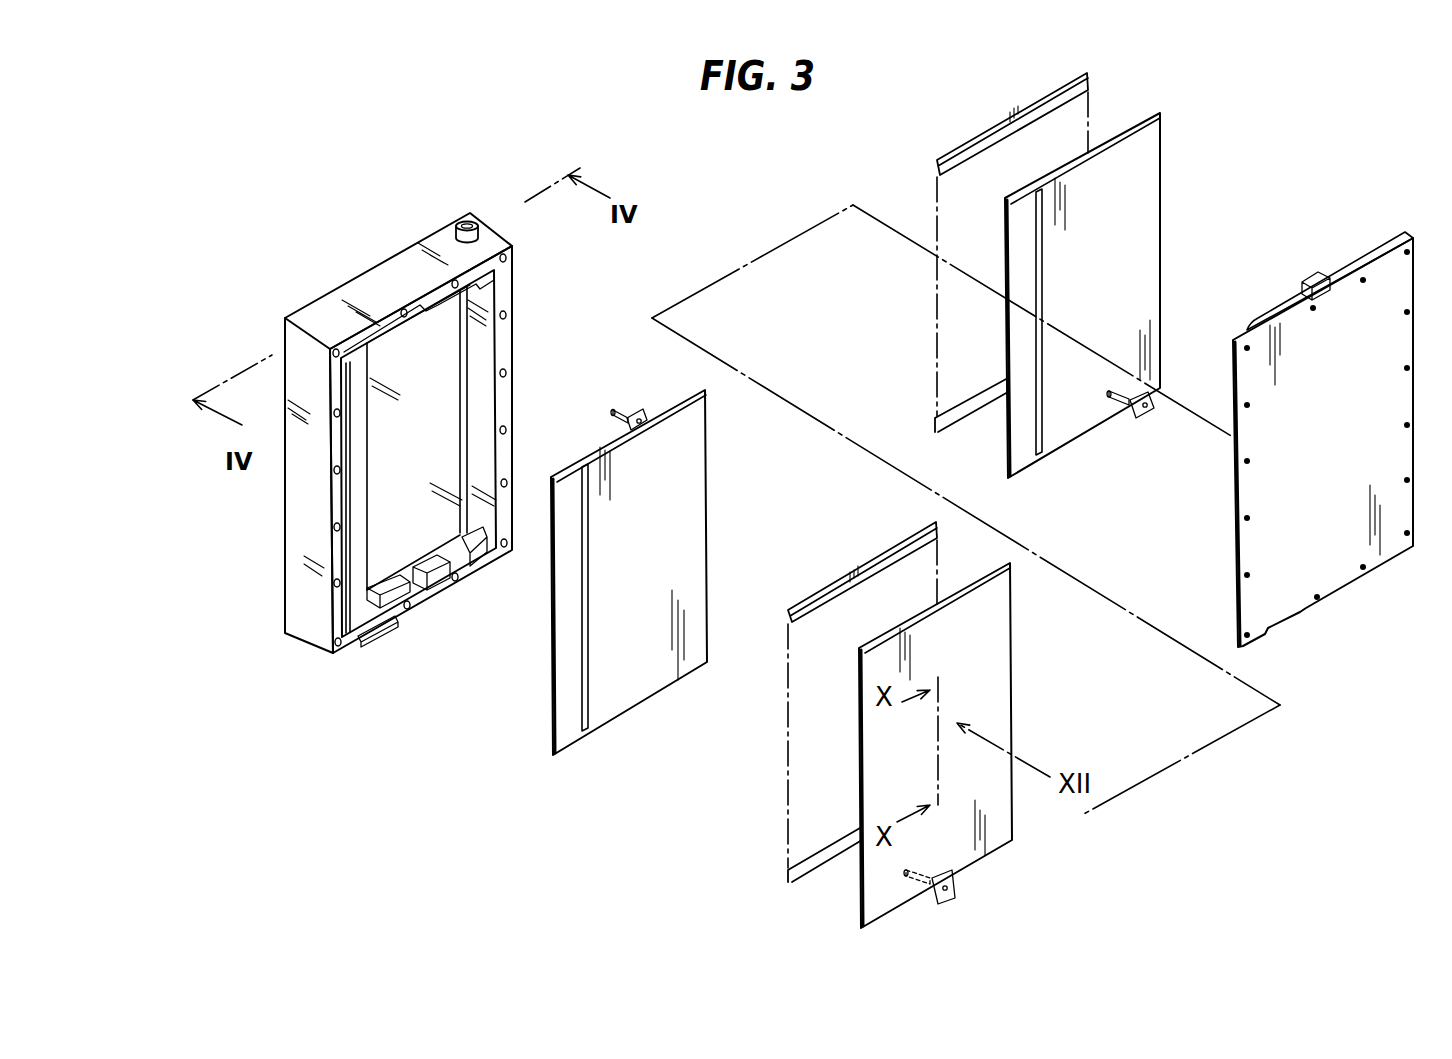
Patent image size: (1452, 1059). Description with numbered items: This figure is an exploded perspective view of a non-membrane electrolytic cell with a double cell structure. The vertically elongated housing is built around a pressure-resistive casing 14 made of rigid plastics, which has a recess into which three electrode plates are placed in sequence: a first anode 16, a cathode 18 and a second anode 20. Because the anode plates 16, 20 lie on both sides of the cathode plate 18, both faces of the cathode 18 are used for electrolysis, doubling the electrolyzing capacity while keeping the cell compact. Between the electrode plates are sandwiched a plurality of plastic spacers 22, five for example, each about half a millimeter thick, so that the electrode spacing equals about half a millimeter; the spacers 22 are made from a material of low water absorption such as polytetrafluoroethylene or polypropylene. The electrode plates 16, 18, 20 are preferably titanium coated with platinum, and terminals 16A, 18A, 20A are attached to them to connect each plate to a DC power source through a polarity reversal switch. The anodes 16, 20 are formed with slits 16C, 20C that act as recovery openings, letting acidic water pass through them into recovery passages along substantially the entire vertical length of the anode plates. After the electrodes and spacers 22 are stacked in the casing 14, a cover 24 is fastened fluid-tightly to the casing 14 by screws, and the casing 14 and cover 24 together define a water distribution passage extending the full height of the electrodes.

The casing 14 is at (313, 628).
The first anode 16 is at (572, 468).
The terminal 16A is at (622, 410).
The slit 16C is at (586, 658).
The cathode 18 is at (1000, 718).
The terminal 18A is at (955, 874).
The second anode 20 is at (1145, 268).
The terminal 20A is at (1128, 418).
The slit 20C is at (1040, 350).
The spacers 22 is at (970, 147).
The cover 24 is at (1377, 563).